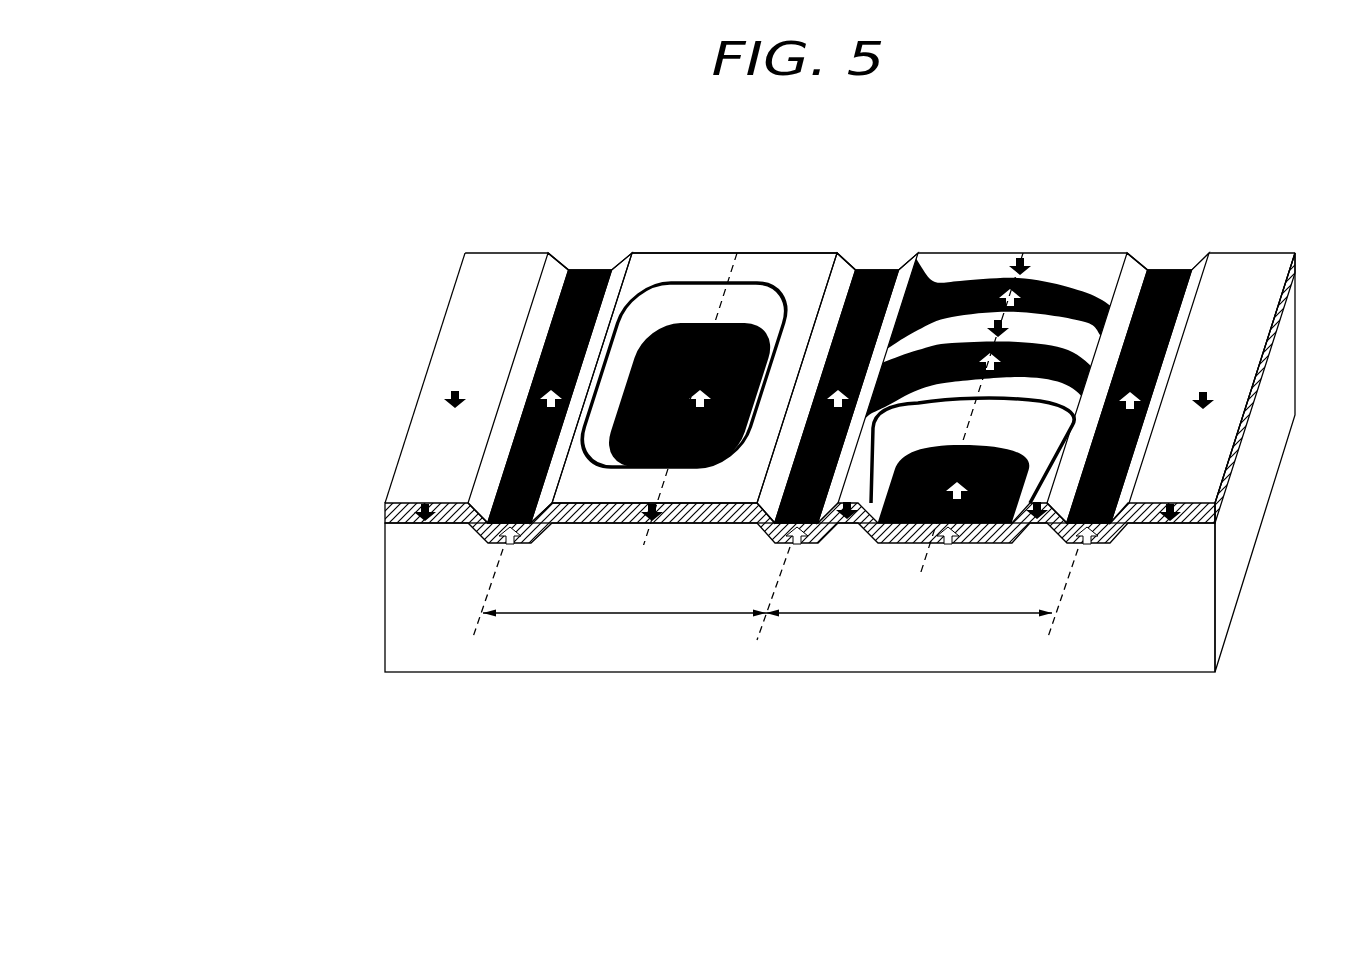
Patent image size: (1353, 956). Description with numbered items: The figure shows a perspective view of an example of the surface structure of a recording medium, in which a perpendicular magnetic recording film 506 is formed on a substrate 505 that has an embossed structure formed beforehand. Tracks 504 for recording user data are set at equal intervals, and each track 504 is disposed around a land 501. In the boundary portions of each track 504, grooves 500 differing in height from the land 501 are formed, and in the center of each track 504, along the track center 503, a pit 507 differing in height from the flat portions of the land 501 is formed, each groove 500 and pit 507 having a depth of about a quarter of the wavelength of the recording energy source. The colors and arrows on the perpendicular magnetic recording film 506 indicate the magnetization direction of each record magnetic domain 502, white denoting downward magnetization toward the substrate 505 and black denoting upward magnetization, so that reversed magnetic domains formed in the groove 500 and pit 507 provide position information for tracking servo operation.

The groove 500 is at (588, 268).
The land 501 is at (725, 256).
The record magnetic domain 502 is at (1088, 253).
The track center 503 is at (922, 562).
The track 504 is at (775, 597).
The substrate 505 is at (398, 611).
The perpendicular magnetic recording film 506 is at (385, 504).
The pit 507 is at (722, 370).